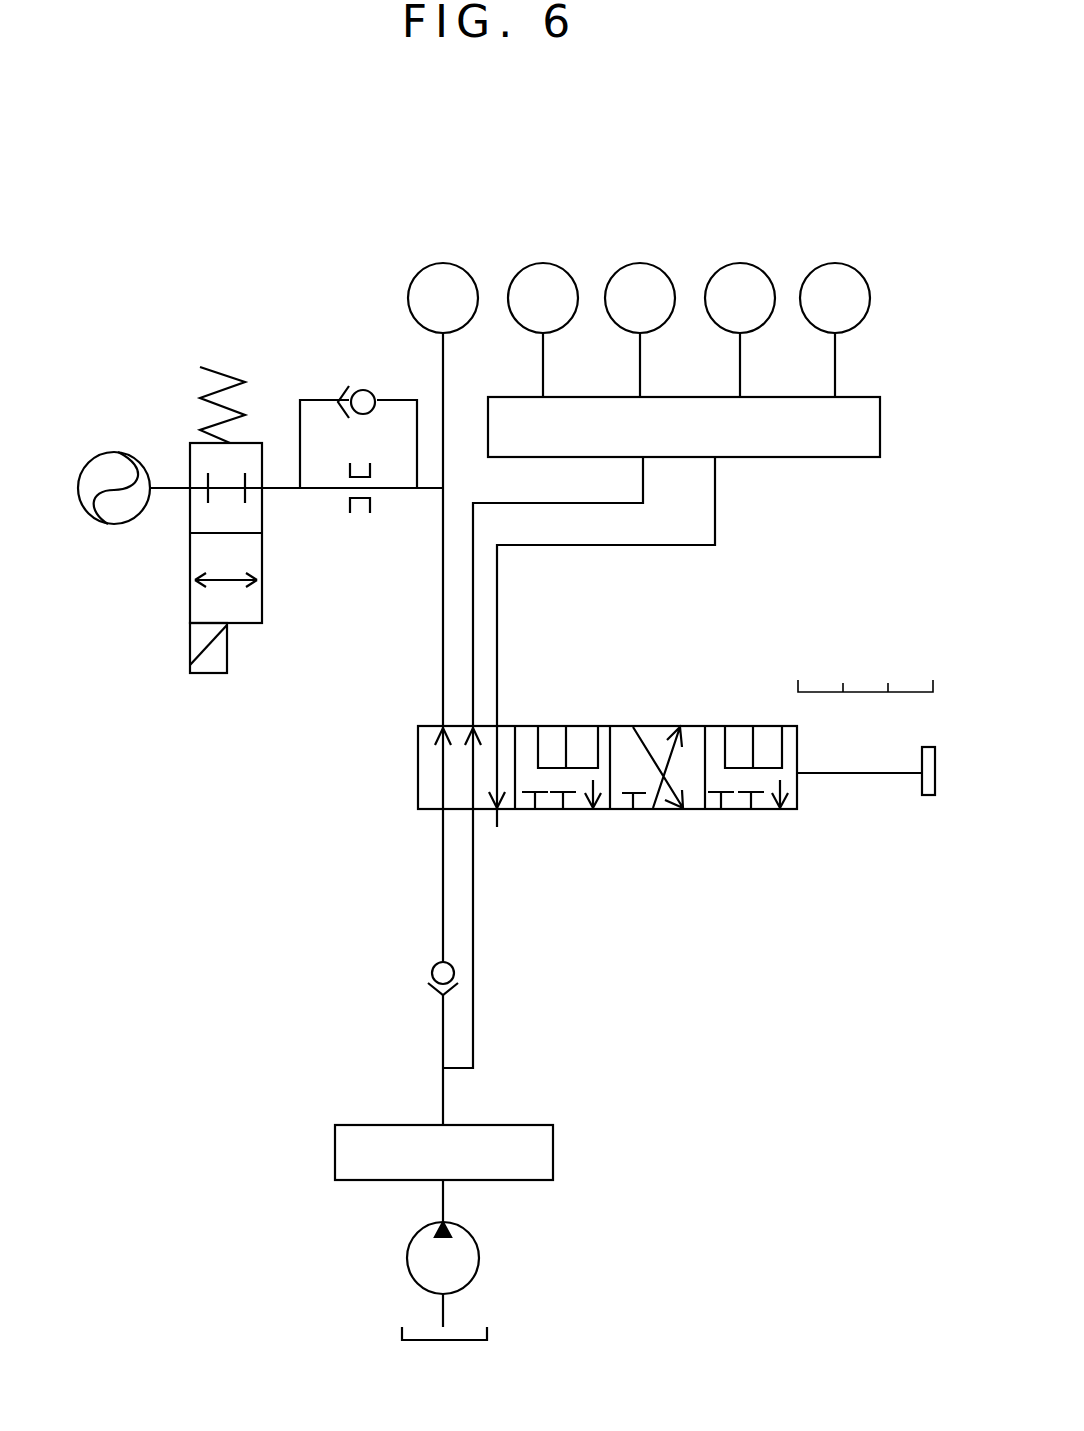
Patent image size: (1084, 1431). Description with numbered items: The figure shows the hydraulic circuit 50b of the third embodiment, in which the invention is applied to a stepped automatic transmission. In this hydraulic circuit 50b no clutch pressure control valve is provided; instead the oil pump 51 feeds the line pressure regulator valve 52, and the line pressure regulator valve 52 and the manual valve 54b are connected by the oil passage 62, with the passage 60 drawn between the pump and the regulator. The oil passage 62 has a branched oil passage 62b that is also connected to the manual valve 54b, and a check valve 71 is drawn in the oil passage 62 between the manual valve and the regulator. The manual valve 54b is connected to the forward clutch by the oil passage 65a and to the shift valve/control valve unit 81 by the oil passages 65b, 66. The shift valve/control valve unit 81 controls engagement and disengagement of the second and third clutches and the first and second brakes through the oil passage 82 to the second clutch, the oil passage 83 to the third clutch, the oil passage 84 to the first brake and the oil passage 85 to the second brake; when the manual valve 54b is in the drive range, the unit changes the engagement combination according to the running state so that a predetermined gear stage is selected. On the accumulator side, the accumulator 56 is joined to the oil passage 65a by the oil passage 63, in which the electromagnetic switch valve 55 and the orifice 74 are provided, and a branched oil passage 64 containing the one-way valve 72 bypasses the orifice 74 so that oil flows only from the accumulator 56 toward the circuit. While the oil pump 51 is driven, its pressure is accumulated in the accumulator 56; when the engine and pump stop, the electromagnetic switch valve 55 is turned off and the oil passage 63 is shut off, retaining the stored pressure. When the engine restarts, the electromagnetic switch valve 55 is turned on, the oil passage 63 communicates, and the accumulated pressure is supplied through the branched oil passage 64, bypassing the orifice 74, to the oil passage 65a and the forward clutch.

The hydraulic circuit 50b is at (838, 214).
The oil pump 51 is at (482, 1255).
The line pressure regulator valve 52 is at (527, 1135).
The manual valve 54b is at (622, 722).
The electromagnetic switch valve 55 is at (190, 553).
The accumulator 56 is at (92, 452).
The oil passage 60 is at (443, 1202).
The oil passage 62 is at (443, 880).
The branched oil passage 62b is at (473, 917).
The oil passage 63 is at (283, 492).
The branched oil passage 64 is at (393, 398).
The oil passage 65a is at (443, 623).
The oil passage 65b is at (540, 501).
The oil passage 66 is at (715, 518).
The check valve 71 is at (435, 975).
The one-way valve 72 is at (364, 389).
The orifice 74 is at (360, 518).
The shift valve/control valve unit 81 is at (880, 430).
The oil passage 82 is at (543, 363).
The oil passage 83 is at (640, 363).
The oil passage 84 is at (740, 363).
The oil passage 85 is at (835, 363).